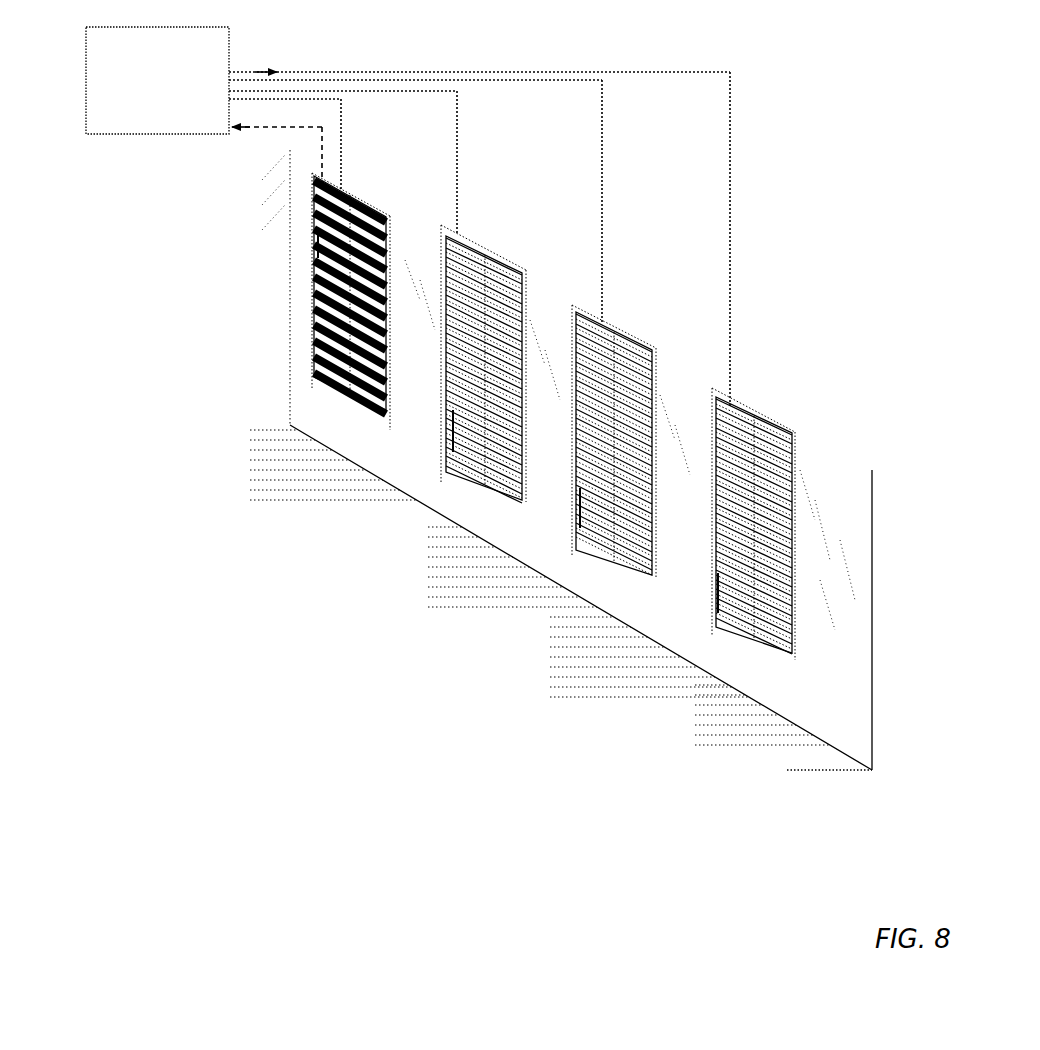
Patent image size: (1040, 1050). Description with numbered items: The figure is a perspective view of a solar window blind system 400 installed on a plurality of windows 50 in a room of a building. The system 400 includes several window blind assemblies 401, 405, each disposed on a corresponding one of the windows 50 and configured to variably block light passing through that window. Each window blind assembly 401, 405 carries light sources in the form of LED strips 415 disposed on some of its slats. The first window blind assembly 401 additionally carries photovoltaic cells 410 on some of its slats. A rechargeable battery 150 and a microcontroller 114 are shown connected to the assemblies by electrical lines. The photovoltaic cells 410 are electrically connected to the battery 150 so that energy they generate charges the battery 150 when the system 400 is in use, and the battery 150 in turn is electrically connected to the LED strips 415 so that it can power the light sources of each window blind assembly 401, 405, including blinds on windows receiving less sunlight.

The solar window blind system 400 is at (942, 178).
The rechargeable battery 150 is at (178, 70).
The microcontroller 114 is at (178, 111).
The window blind assembly 401 is at (310, 290).
The window blind assembly 405 is at (526, 268).
The photovoltaic cells 410 is at (318, 365).
The LED strips 415 is at (318, 256).
The windows 50 is at (390, 430).